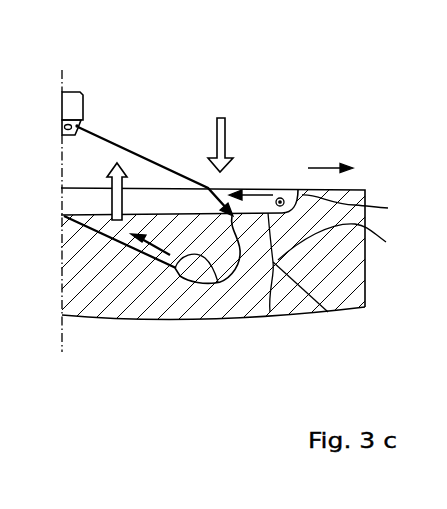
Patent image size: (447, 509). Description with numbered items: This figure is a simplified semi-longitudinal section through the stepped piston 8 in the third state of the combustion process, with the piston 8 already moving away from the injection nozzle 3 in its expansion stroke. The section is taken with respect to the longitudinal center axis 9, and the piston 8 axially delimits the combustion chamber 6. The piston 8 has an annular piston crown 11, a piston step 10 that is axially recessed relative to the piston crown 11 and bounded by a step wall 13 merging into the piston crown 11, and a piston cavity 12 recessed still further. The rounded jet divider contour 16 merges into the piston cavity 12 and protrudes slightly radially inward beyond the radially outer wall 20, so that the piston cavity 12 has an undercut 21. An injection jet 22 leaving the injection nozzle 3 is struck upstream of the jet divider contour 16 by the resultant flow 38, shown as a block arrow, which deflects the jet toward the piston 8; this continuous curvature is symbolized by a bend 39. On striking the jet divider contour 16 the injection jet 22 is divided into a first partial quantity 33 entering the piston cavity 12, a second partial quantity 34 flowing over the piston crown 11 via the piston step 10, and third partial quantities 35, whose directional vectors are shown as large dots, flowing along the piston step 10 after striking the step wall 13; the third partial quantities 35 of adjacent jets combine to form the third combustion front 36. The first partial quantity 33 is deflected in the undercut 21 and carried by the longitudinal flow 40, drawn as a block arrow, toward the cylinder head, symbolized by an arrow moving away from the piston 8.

The injection nozzle 3 is at (70, 100).
The injection jet 22 is at (110, 141).
The bend 39 is at (207, 184).
The longitudinal flow 40 is at (126, 197).
The resultant flow 38 is at (220, 114).
The combustion chamber 6 is at (97, 172).
The third combustion front 36 is at (257, 198).
The second partial quantity 34 is at (330, 163).
The piston crown 11 is at (355, 190).
The step wall 13 is at (355, 208).
The third partial quantities 35 is at (343, 242).
The piston step 10 is at (328, 312).
The jet divider contour 16 is at (270, 312).
The radially outer wall 20 is at (238, 214).
The undercut 21 is at (234, 268).
The piston cavity 12 is at (176, 282).
The first partial quantity 33 is at (145, 258).
The piston 8 is at (203, 322).
The longitudinal center axis 9 is at (62, 352).